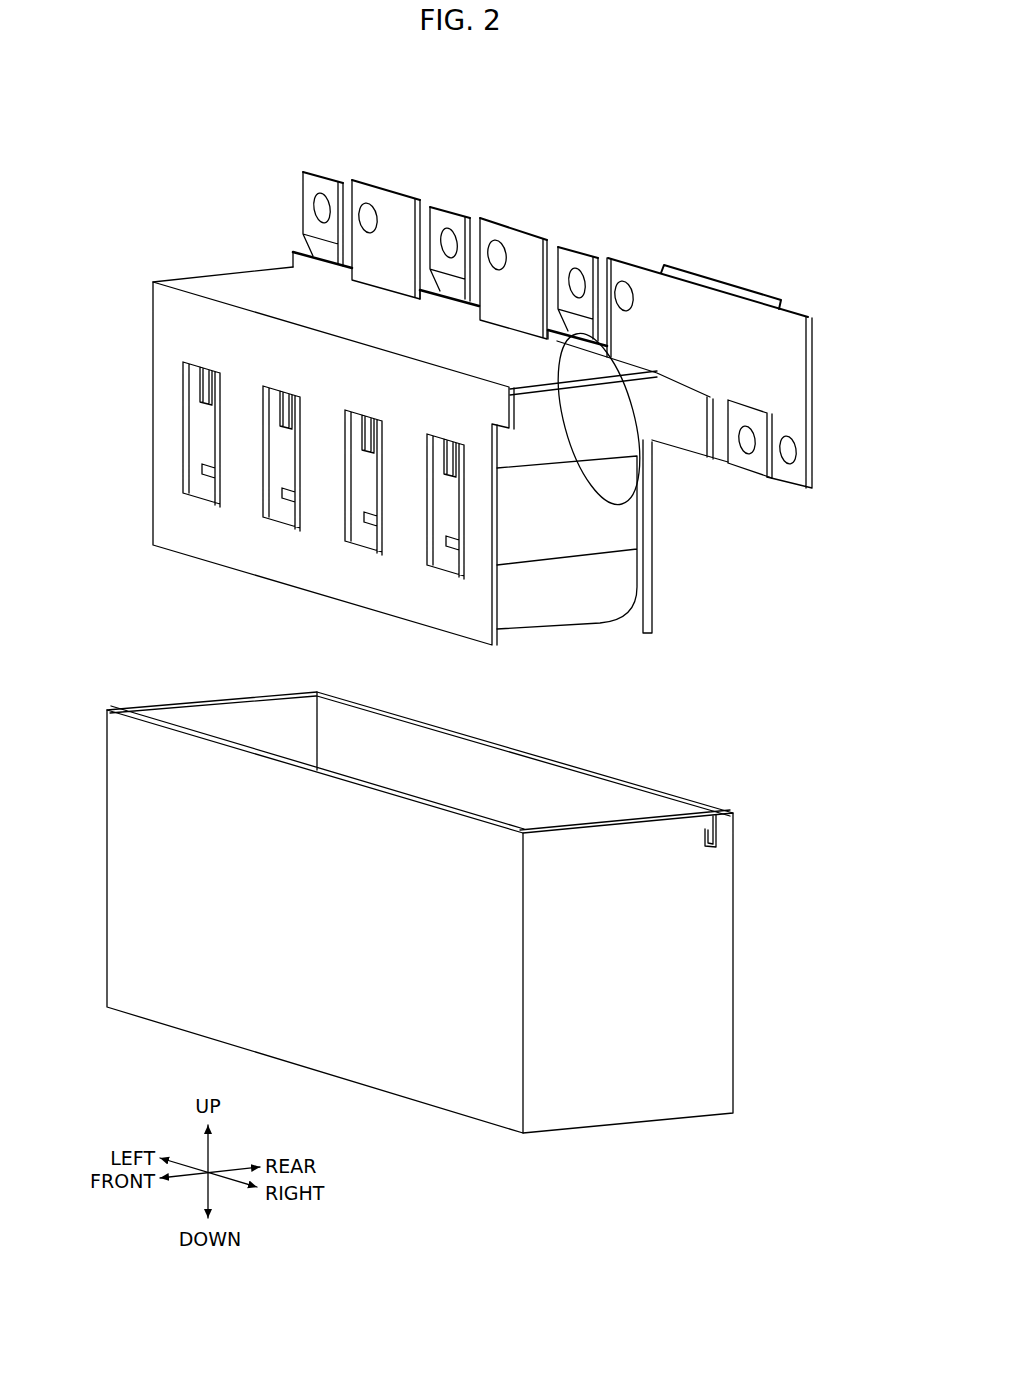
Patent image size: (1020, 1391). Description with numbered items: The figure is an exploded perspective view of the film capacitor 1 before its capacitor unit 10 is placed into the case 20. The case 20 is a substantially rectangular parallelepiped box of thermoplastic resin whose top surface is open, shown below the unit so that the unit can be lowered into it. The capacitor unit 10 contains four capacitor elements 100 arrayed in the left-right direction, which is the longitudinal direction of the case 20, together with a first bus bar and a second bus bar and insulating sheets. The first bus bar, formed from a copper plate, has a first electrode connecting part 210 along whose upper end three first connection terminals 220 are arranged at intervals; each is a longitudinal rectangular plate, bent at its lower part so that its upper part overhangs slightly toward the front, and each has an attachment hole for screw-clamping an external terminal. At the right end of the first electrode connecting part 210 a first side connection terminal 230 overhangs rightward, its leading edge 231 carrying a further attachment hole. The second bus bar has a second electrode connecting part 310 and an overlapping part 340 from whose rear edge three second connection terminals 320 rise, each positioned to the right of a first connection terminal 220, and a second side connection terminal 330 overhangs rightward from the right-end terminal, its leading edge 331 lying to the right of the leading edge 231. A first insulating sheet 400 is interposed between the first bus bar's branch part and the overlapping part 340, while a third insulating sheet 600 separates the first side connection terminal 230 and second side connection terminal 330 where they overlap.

The film capacitor 1 is at (180, 210).
The capacitor unit 10 is at (150, 276).
The case 20 is at (210, 695).
The capacitor element 100 is at (565, 626).
The first electrode connecting part 210 is at (655, 574).
The first connection terminal 220 is at (322, 168).
The first side connection terminal 230 is at (748, 478).
The leading edge 231 is at (736, 440).
The second electrode connecting part 310 is at (175, 377).
The second connection terminal 320 is at (385, 185).
The second side connection terminal 330 is at (805, 320).
The leading edge 331 is at (799, 489).
The overlapping part 340 is at (254, 288).
The first insulating sheet 400 is at (638, 442).
The third insulating sheet 600 is at (722, 265).